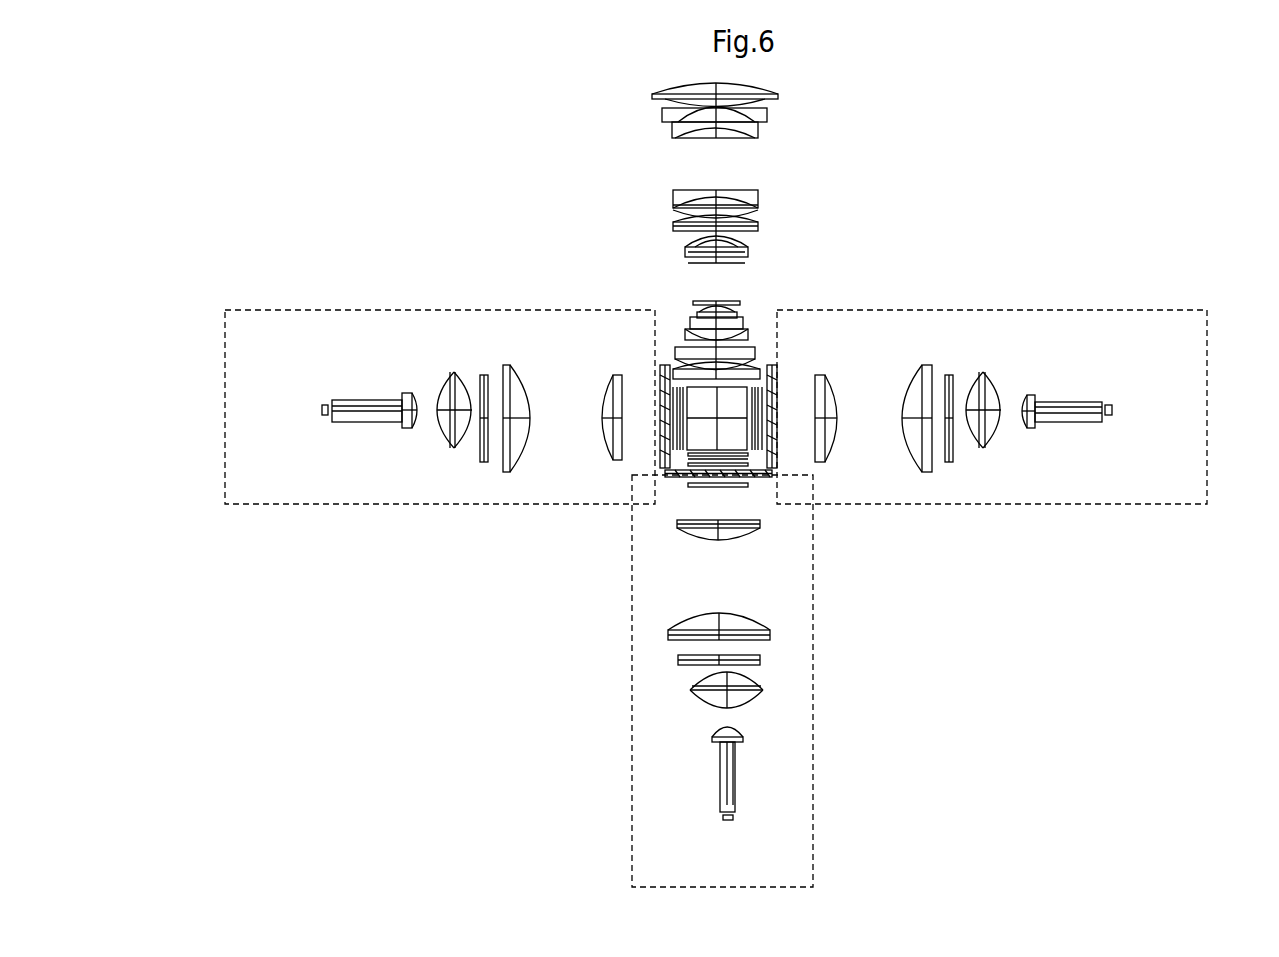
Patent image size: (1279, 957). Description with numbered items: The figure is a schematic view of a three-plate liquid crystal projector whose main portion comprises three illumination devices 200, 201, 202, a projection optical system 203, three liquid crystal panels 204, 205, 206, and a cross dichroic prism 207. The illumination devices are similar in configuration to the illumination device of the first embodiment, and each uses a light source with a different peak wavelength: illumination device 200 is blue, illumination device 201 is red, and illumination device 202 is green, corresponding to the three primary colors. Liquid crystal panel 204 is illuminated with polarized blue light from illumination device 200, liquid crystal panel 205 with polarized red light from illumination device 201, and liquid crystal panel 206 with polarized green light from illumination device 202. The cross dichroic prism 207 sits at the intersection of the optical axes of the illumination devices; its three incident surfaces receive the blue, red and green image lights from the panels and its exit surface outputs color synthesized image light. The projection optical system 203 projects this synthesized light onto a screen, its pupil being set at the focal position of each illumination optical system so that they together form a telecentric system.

The illumination device 200 is at (473, 310).
The illumination device 201 is at (932, 313).
The illumination device 202 is at (635, 748).
The projection optical system 203 is at (655, 75).
The liquid crystal panel 204 is at (655, 377).
The liquid crystal panel 205 is at (772, 358).
The liquid crystal panel 206 is at (798, 574).
The cross dichroic prism 207 is at (616, 512).